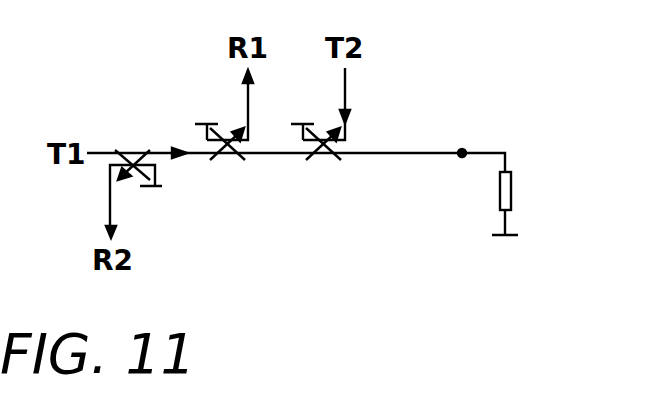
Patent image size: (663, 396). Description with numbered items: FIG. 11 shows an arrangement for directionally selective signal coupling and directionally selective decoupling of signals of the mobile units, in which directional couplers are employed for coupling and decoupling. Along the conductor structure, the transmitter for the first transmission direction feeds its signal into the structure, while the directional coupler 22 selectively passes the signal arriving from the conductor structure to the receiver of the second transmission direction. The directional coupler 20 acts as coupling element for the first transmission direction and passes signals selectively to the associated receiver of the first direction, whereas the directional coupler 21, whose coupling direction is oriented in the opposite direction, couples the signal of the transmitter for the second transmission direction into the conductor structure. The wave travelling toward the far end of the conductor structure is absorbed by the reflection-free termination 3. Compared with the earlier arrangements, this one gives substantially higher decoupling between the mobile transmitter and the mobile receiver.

The directional coupler 22 is at (133, 177).
The directional coupler 20 is at (230, 162).
The directional coupler 21 is at (325, 162).
The reflection-free termination 3 is at (512, 188).